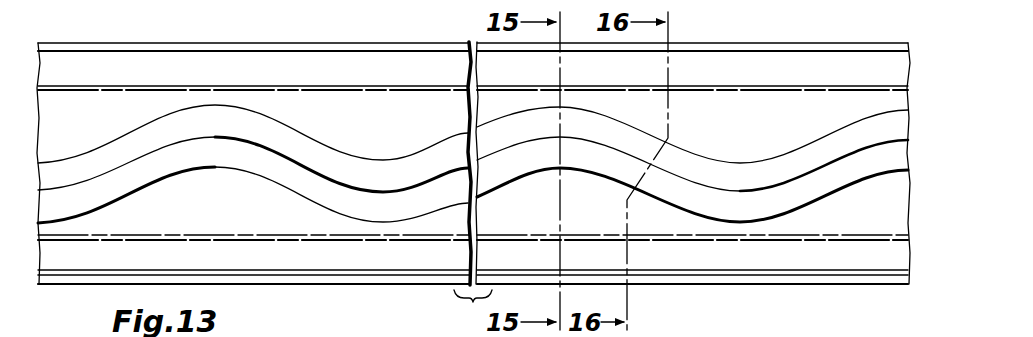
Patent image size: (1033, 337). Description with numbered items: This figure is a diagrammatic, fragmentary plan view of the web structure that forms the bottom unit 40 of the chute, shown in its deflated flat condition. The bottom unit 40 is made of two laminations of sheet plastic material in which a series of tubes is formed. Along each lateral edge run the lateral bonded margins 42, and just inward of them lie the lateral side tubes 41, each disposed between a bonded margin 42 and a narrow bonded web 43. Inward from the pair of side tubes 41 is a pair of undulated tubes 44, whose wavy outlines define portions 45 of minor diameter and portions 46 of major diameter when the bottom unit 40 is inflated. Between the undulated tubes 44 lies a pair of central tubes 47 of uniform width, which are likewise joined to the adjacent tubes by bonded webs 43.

The bottom unit 40 is at (172, 54).
The lateral side tubes 41 is at (320, 80).
The lateral bonded margins 42 is at (346, 27).
The bonded webs 43 is at (364, 93).
The undulated tubes 44 is at (330, 118).
The portions of minor diameter 45 is at (213, 95).
The portions of major diameter 46 is at (157, 197).
The central tubes 47 is at (81, 181).